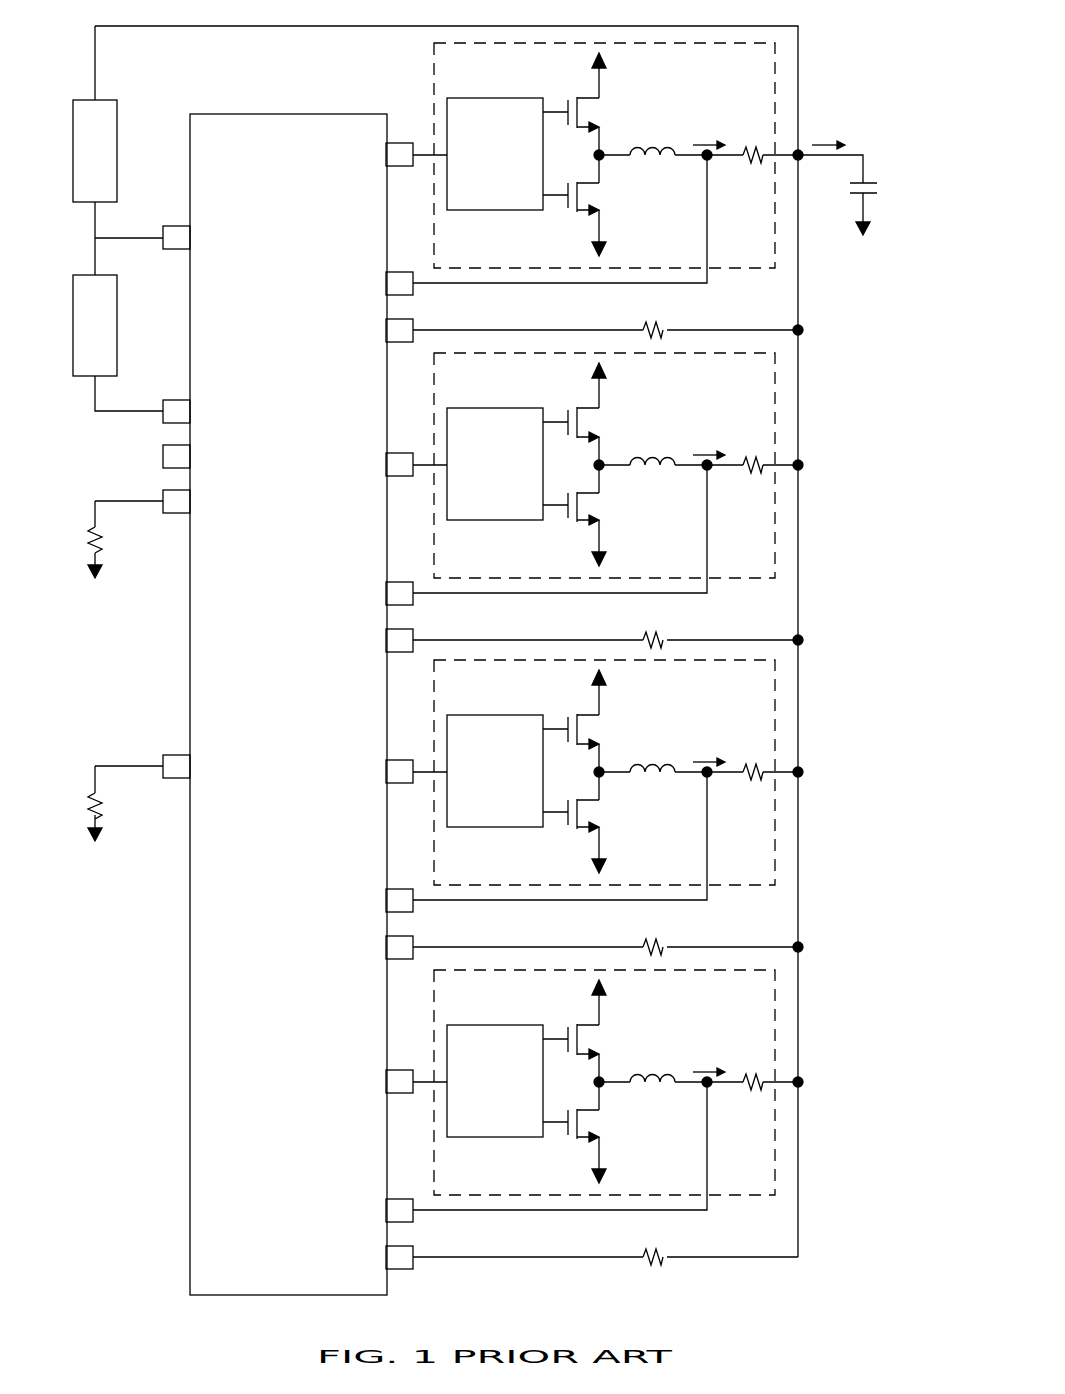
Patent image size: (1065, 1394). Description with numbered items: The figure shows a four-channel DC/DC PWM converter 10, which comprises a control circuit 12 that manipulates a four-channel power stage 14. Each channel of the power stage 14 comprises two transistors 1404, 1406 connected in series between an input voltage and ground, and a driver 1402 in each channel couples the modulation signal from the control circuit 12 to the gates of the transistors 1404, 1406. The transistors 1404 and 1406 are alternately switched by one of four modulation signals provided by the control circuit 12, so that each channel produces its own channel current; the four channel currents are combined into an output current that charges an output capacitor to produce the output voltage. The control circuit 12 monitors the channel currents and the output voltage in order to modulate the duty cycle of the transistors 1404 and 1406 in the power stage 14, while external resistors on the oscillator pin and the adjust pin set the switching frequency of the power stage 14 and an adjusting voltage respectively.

The four-channel DC/DC PWM converter 10 is at (852, 59).
The control circuit 12 is at (287, 114).
The four-channel power stage 14 is at (433, 62).
The driver 1402 is at (488, 98).
The transistor 1404 is at (607, 110).
The transistor 1406 is at (607, 198).